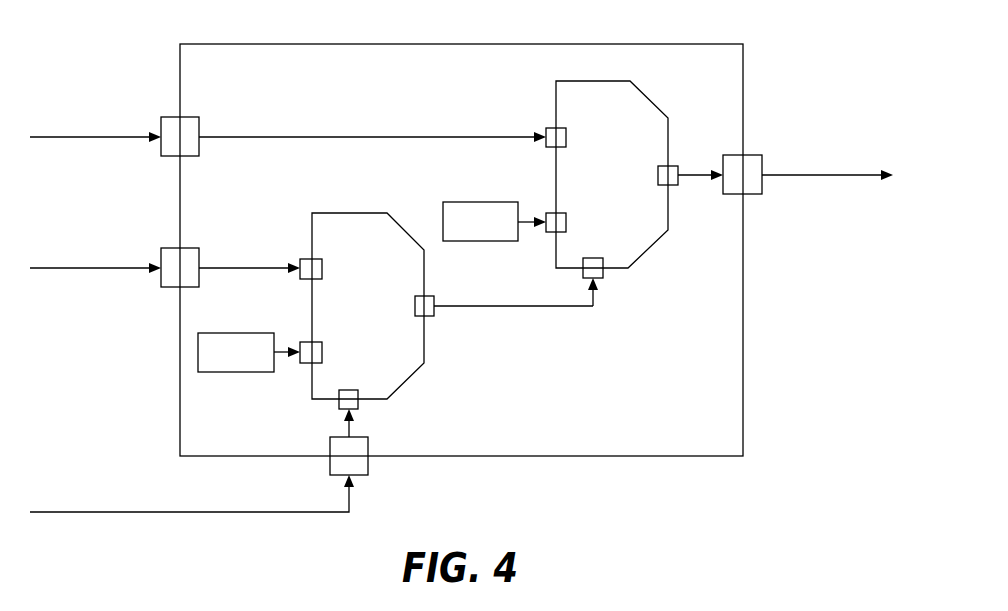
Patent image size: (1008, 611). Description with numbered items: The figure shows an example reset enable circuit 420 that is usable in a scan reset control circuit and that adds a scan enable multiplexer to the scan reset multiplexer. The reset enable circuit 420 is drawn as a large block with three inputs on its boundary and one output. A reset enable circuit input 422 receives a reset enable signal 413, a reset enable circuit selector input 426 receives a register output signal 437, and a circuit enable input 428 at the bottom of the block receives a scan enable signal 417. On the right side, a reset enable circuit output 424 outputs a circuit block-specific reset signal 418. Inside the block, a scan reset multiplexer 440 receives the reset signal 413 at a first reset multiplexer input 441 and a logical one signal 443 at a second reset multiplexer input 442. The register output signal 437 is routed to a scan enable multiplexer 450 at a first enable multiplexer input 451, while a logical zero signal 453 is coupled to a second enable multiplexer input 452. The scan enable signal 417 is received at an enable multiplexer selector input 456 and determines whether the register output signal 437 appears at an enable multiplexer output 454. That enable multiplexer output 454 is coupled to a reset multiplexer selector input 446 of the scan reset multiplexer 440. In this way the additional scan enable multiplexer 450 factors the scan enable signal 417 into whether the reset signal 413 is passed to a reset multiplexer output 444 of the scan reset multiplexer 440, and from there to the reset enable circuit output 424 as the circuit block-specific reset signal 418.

The reset enable circuit 420 is at (735, 444).
The reset enable signal 413 is at (92, 139).
The reset enable circuit input 422 is at (186, 116).
The register output signal 437 is at (92, 270).
The reset enable circuit selector input 426 is at (186, 247).
The scan enable multiplexer 450 is at (387, 316).
The first enable multiplexer input 451 is at (305, 258).
The second enable multiplexer input 452 is at (306, 364).
The logical "0" signal 453 is at (238, 332).
The enable multiplexer output 454 is at (425, 317).
The enable multiplexer selector input 456 is at (358, 405).
The circuit enable input 428 is at (368, 462).
The scan enable signal 417 is at (86, 514).
The scan reset multiplexer 440 is at (631, 186).
The first reset multiplexer input 441 is at (552, 127).
The second reset multiplexer input 442 is at (552, 233).
The logical "1" signal 443 is at (483, 201).
The reset multiplexer output 444 is at (670, 165).
The reset multiplexer selector input 446 is at (603, 272).
The reset enable circuit output 424 is at (748, 154).
The circuit block-specific reset signal 418 is at (817, 177).